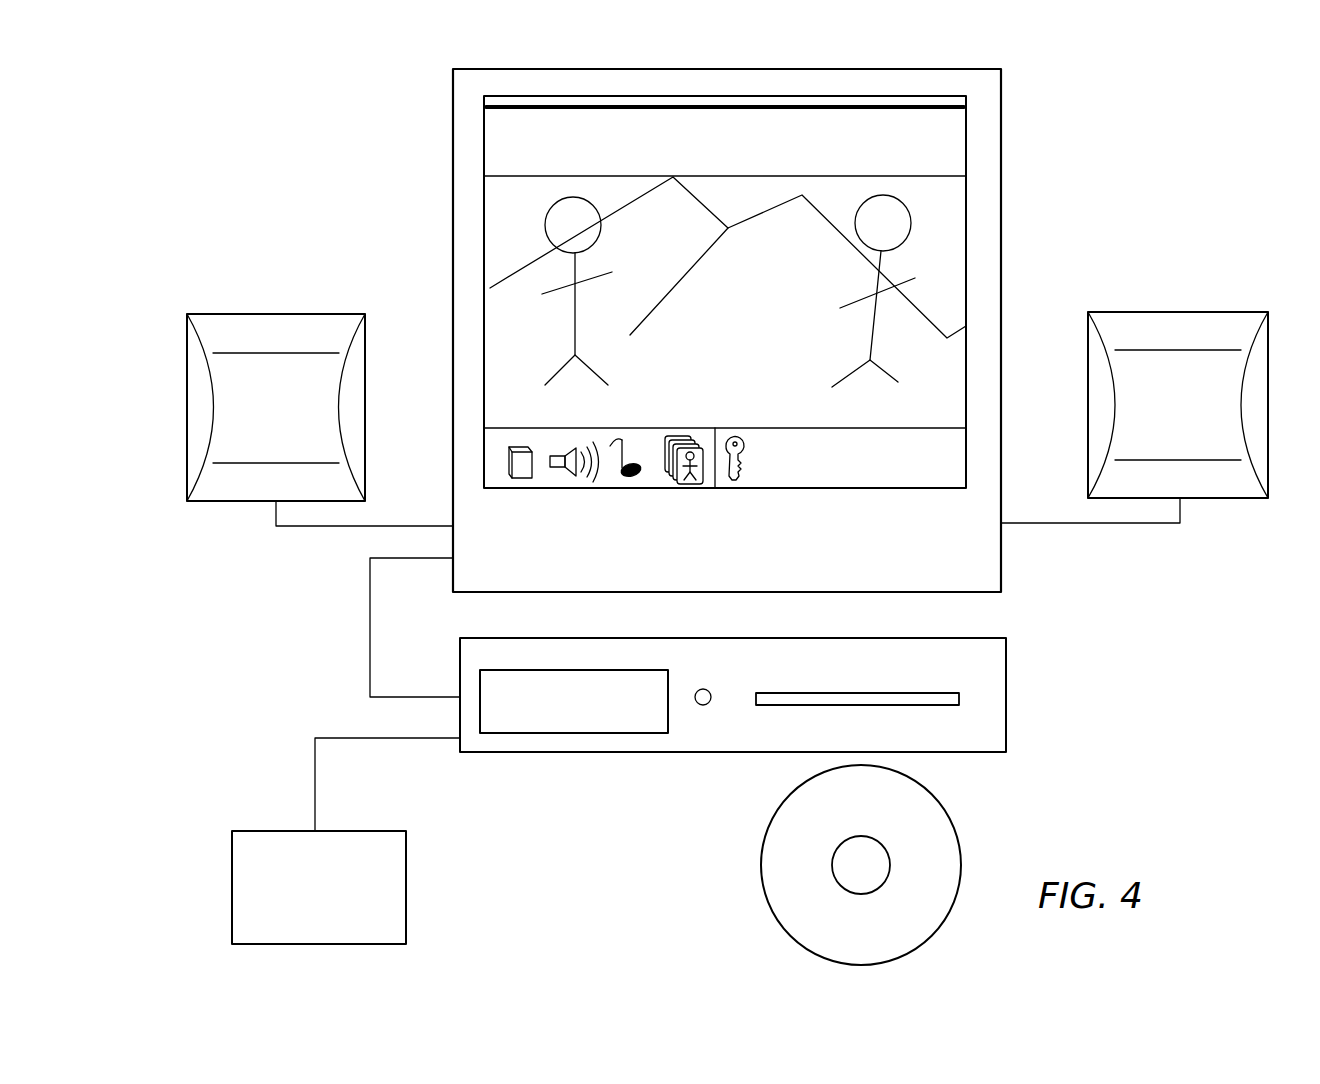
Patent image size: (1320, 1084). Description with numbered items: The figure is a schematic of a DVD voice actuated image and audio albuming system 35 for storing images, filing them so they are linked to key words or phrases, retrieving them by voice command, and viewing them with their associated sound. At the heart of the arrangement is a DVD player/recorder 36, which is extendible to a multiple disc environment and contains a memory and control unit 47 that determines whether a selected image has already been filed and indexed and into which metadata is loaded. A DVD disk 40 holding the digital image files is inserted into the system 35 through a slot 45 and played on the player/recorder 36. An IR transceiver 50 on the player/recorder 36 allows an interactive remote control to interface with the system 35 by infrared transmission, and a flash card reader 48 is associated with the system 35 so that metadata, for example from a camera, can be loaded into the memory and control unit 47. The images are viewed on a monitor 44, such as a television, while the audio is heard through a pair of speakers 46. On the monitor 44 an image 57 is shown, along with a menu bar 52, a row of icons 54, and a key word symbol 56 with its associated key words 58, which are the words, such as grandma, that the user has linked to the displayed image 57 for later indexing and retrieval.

The system 35 is at (517, 823).
The player/recorder 36 is at (998, 720).
The DVD disk 40 is at (773, 877).
The monitor 44 is at (980, 238).
The slot 45 is at (938, 705).
The speakers 46 is at (357, 361).
The memory and control unit 47 is at (614, 733).
The flash card reader 48 is at (255, 831).
The IR transceiver 50 is at (706, 705).
The menu bar 52 is at (955, 100).
The icons 54 is at (608, 480).
The key word symbol 56 is at (737, 487).
The image 57 is at (953, 140).
The key words 58 is at (833, 487).